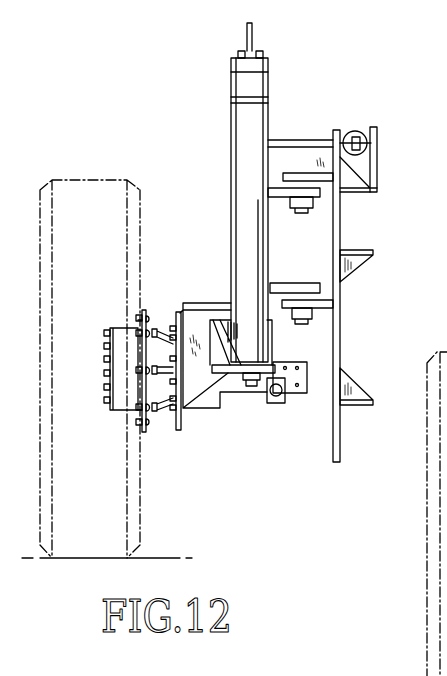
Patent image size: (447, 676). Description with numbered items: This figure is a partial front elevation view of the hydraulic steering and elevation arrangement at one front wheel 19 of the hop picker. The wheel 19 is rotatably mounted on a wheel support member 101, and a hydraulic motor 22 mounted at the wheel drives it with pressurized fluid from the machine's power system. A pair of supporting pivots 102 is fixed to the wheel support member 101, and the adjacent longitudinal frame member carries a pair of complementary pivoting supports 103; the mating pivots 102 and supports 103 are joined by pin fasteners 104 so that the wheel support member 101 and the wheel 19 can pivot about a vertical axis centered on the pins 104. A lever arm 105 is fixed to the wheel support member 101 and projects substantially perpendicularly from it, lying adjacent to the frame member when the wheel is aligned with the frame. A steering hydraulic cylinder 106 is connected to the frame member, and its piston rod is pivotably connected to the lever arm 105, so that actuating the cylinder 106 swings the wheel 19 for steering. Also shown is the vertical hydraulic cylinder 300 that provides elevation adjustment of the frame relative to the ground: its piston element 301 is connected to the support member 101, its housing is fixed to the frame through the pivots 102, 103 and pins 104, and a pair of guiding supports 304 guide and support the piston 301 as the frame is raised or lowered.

The front wheel 19 is at (88, 178).
The hydraulic cylinder 300 is at (228, 118).
The guiding support 304 is at (263, 108).
The lever arm 105 is at (300, 139).
The hydraulic cylinder 106 is at (368, 130).
The pin fastener 104 is at (291, 222).
The pivoting support 103 is at (328, 293).
The supporting pivot 102 is at (315, 283).
The wheel support member 101 is at (210, 390).
The piston element 301 is at (249, 386).
The hydraulic motor 22 is at (293, 394).